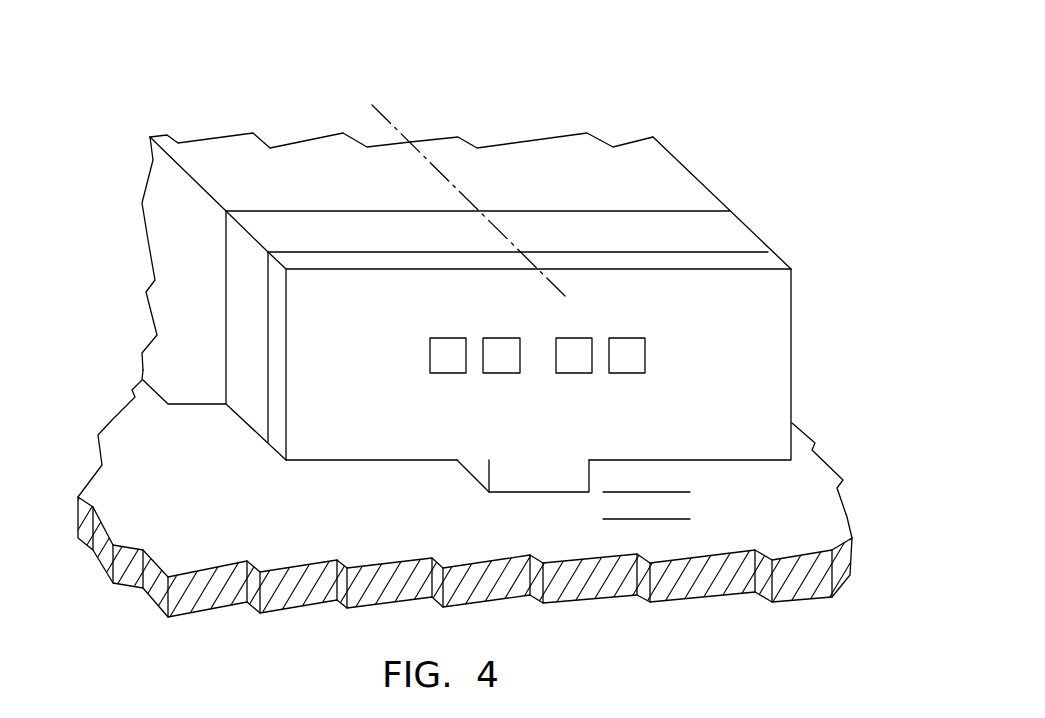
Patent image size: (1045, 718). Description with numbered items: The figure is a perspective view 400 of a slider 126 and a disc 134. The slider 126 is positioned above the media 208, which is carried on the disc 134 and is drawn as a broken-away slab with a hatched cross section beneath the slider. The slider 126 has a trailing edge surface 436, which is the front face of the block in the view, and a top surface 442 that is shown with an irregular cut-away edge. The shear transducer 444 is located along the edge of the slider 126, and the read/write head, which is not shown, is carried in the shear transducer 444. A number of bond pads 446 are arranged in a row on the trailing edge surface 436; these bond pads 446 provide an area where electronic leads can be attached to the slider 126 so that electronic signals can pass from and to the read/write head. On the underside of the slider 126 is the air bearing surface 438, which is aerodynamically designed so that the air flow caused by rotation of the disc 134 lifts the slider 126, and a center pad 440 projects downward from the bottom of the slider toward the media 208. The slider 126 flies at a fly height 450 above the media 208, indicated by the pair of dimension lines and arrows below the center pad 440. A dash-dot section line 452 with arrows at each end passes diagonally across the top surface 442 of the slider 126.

The perspective view 400 is at (467, 279).
The slider 126 is at (502, 158).
The top surface 442 is at (603, 193).
The shear transducer 444 is at (757, 230).
The trailing edge surface 436 is at (362, 336).
The air bearing surface 438 is at (205, 427).
The center pad 440 is at (538, 493).
The bond pads 446 is at (646, 355).
The fly height 450 is at (680, 468).
The section line 452 is at (372, 105).
The media 208 is at (257, 522).
The disc 134 is at (153, 585).